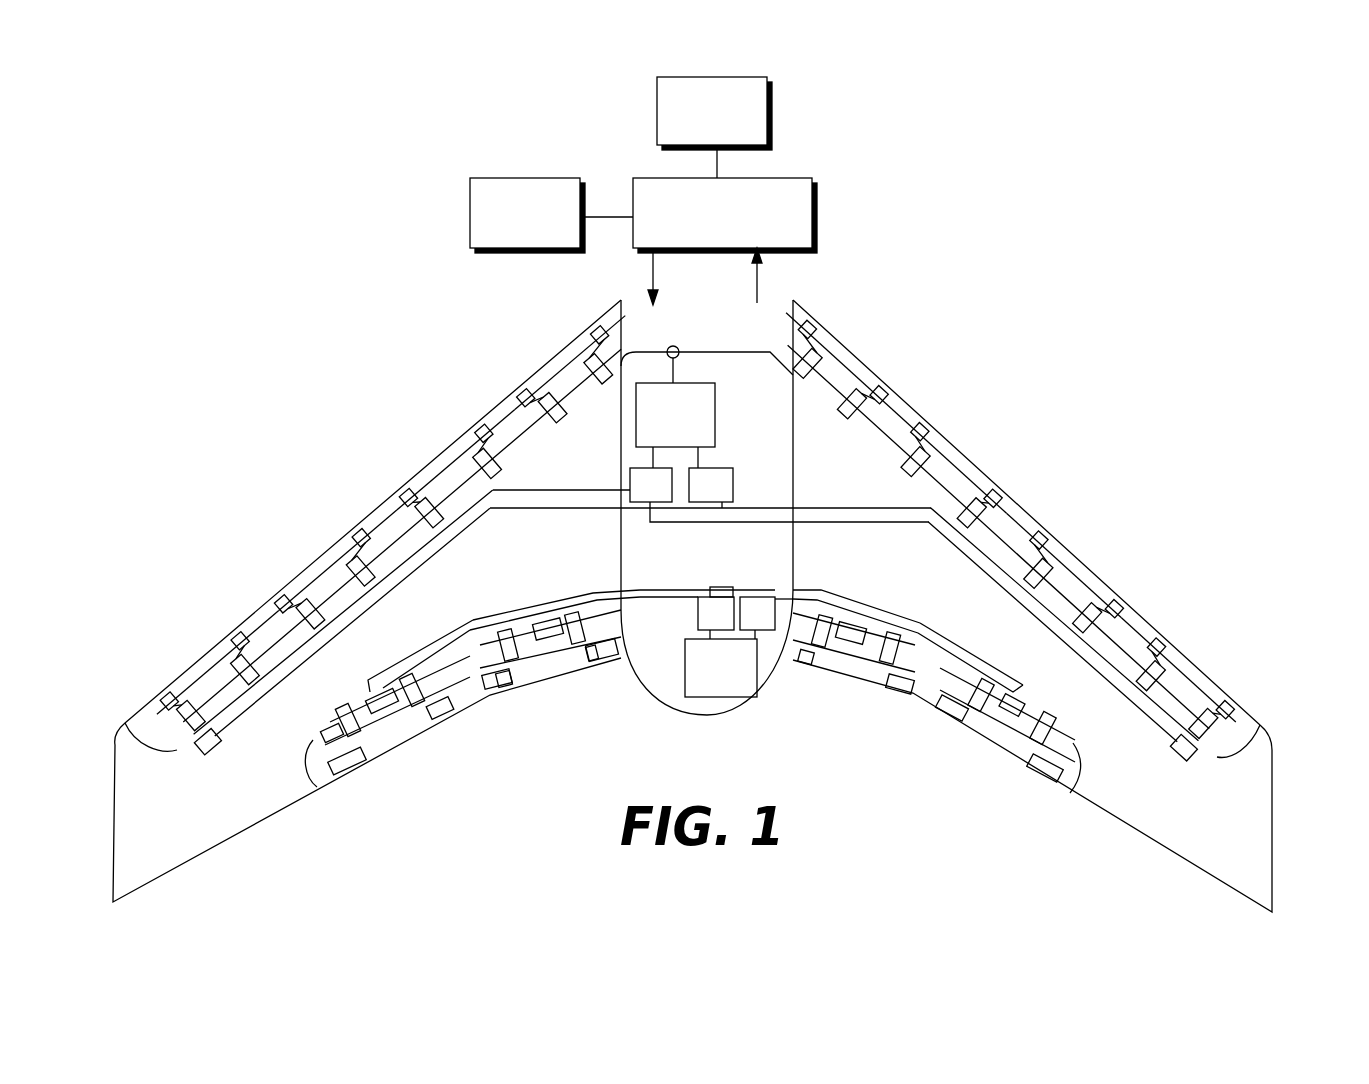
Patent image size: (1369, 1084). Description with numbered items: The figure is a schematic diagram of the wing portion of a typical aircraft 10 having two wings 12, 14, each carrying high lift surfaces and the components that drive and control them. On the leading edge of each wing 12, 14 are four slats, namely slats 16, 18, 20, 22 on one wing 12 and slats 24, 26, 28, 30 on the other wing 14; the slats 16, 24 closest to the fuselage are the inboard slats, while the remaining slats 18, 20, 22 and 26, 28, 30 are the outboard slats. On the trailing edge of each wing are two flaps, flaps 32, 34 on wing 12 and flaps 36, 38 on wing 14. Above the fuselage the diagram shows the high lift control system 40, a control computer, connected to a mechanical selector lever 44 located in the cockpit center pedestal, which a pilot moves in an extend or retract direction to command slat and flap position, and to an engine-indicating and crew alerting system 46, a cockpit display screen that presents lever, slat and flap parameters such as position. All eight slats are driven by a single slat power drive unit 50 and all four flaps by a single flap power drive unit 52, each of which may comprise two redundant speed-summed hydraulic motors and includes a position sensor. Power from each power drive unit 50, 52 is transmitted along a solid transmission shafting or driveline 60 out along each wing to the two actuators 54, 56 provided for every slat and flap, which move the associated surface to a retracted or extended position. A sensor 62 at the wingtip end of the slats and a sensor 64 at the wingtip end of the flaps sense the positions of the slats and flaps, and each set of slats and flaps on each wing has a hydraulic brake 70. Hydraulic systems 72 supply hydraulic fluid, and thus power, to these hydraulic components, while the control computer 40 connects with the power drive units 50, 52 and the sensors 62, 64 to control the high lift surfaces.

The aircraft 10 is at (336, 362).
The wing 12 is at (114, 822).
The wing 14 is at (1273, 795).
The inboard slat 16 is at (553, 355).
The outboard slat 18 is at (430, 450).
The outboard slat 20 is at (330, 540).
The outboard slat 22 is at (210, 640).
The inboard slat 24 is at (852, 350).
The outboard slat 26 is at (970, 460).
The outboard slat 28 is at (1079, 560).
The outboard slat 30 is at (1182, 656).
The flap 32 is at (560, 679).
The flap 34 is at (400, 760).
The flap 36 is at (857, 678).
The flap 38 is at (994, 757).
The high lift control system 40 is at (815, 212).
The high lift selector lever 44 is at (773, 93).
The engine-indicating and crew alerting system (EICAS) 46 is at (532, 178).
The slat power drive unit 50 is at (716, 410).
The flap power drive unit 52 is at (708, 697).
The actuator 54 is at (556, 418).
The actuator 56 is at (590, 378).
The driveline 60 is at (524, 440).
The sensor 62 is at (124, 724).
The sensor 64 is at (317, 792).
The hydraulic brake 70 is at (208, 742).
The hydraulic system 72 is at (640, 502).